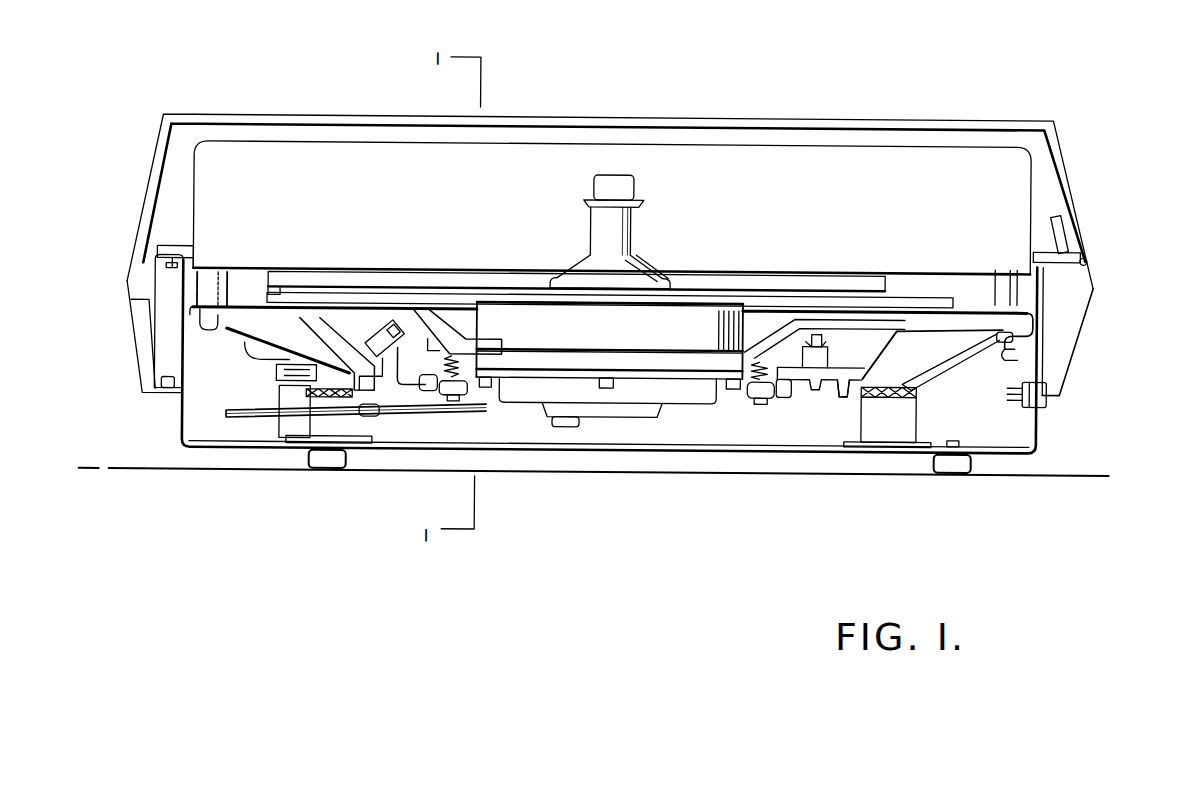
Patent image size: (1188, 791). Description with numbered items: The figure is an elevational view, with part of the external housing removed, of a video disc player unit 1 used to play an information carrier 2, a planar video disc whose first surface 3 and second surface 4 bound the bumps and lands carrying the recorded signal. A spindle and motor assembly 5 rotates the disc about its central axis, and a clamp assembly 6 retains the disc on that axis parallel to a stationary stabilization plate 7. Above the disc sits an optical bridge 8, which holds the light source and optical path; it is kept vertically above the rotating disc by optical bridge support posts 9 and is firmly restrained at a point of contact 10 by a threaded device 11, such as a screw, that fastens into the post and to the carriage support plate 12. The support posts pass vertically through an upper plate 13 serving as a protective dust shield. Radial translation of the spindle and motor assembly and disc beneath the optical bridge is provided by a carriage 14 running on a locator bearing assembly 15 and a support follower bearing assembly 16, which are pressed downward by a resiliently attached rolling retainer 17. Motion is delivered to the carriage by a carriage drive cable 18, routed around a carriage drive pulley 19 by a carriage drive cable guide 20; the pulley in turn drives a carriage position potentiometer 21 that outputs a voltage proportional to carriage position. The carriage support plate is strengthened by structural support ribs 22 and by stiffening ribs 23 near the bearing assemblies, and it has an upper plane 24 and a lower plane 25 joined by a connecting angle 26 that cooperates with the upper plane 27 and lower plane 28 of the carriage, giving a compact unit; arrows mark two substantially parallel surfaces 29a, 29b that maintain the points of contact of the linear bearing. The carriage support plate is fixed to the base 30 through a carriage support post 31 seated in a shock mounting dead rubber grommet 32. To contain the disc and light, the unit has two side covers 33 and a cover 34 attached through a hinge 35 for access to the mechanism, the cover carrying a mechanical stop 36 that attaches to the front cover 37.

The video disc player unit 1 is at (996, 104).
The information carrier 2 is at (948, 293).
The first surface 3 is at (886, 283).
The second surface 4 is at (700, 297).
The spindle and motor assembly 5 is at (633, 432).
The clamp assembly 6 is at (617, 229).
The stabilization plate 7 is at (275, 291).
The optical bridge 8 is at (866, 152).
The optical bridge support posts 9 is at (1020, 288).
The point of contact 10 is at (1022, 328).
The threaded device 11 is at (1020, 349).
The carriage support plate 12 is at (946, 363).
The upper plate 13 is at (1030, 303).
The carriage 14 is at (836, 320).
The locator bearing assembly 15 is at (413, 410).
The support follower bearing assembly 16 is at (812, 408).
The resiliently attached rolling retainer 17 is at (770, 412).
The carriage drive cable 18 is at (478, 400).
The carriage drive pulley 19 is at (256, 423).
The carriage drive cable guide 20 is at (373, 414).
The carriage position potentiometer 21 is at (276, 374).
The structural support ribs 22 is at (977, 345).
The stiffening ribs 23 is at (848, 404).
The upper plane 24 is at (252, 318).
The lower plane 25 is at (353, 373).
The connecting angle 26 is at (330, 348).
The upper plane 27 is at (407, 310).
The lower plane 28 is at (470, 357).
The parallel surface 29a is at (443, 338).
The parallel surface 29b is at (412, 374).
The base 30 is at (1040, 429).
The carriage support post 31 is at (918, 423).
The shock mounting dead rubber grommet 32 is at (917, 392).
The side covers 33 is at (1085, 328).
The cover 34 is at (1068, 191).
The hinge 35 is at (1087, 258).
The mechanical stop 36 is at (170, 247).
The front cover 37 is at (135, 357).